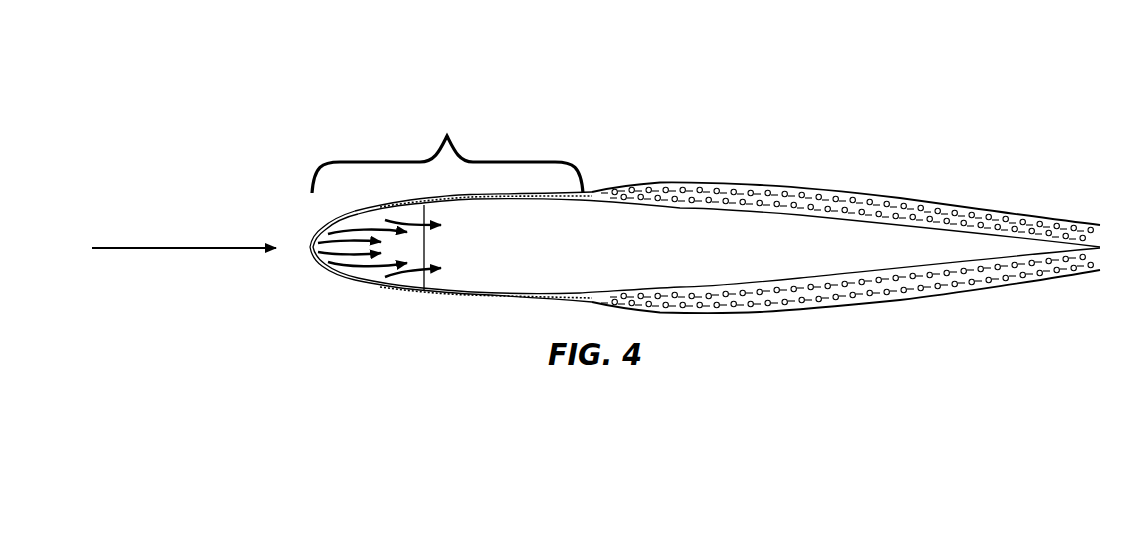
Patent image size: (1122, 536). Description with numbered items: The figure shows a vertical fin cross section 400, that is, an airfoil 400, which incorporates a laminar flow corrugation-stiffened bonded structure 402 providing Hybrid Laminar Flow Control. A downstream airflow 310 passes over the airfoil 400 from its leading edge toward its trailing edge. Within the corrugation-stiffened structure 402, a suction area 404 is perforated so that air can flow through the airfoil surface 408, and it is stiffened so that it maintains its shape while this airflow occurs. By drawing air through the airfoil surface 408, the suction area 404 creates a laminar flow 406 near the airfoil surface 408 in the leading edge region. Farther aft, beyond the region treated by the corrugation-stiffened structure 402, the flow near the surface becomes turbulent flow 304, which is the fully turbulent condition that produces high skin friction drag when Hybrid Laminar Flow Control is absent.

The vertical fin cross section 400 is at (236, 116).
The downstream airflow 310 is at (162, 249).
The laminar flow corrugation-stiffened bonded structure 402 is at (308, 246).
The suction area 404 is at (380, 263).
The laminar flow 406 is at (452, 205).
The airfoil surface 408 is at (537, 198).
The turbulent flow 304 is at (860, 192).